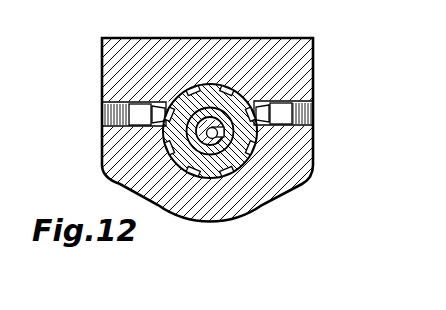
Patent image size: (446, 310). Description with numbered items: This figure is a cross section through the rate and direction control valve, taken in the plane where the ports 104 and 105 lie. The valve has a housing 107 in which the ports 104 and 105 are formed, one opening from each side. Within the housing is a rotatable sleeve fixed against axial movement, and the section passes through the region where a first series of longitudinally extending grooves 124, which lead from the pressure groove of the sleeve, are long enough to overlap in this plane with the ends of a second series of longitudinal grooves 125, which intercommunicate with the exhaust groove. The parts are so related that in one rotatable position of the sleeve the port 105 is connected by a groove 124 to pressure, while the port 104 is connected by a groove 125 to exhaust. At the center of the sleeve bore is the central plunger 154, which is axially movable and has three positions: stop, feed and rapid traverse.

The port 104 is at (313, 102).
The port 105 is at (147, 105).
The housing 107 is at (312, 150).
The longitudinally extending grooves 124 is at (171, 108).
The longitudinal grooves 125 is at (257, 93).
The central plunger 154 is at (210, 118).